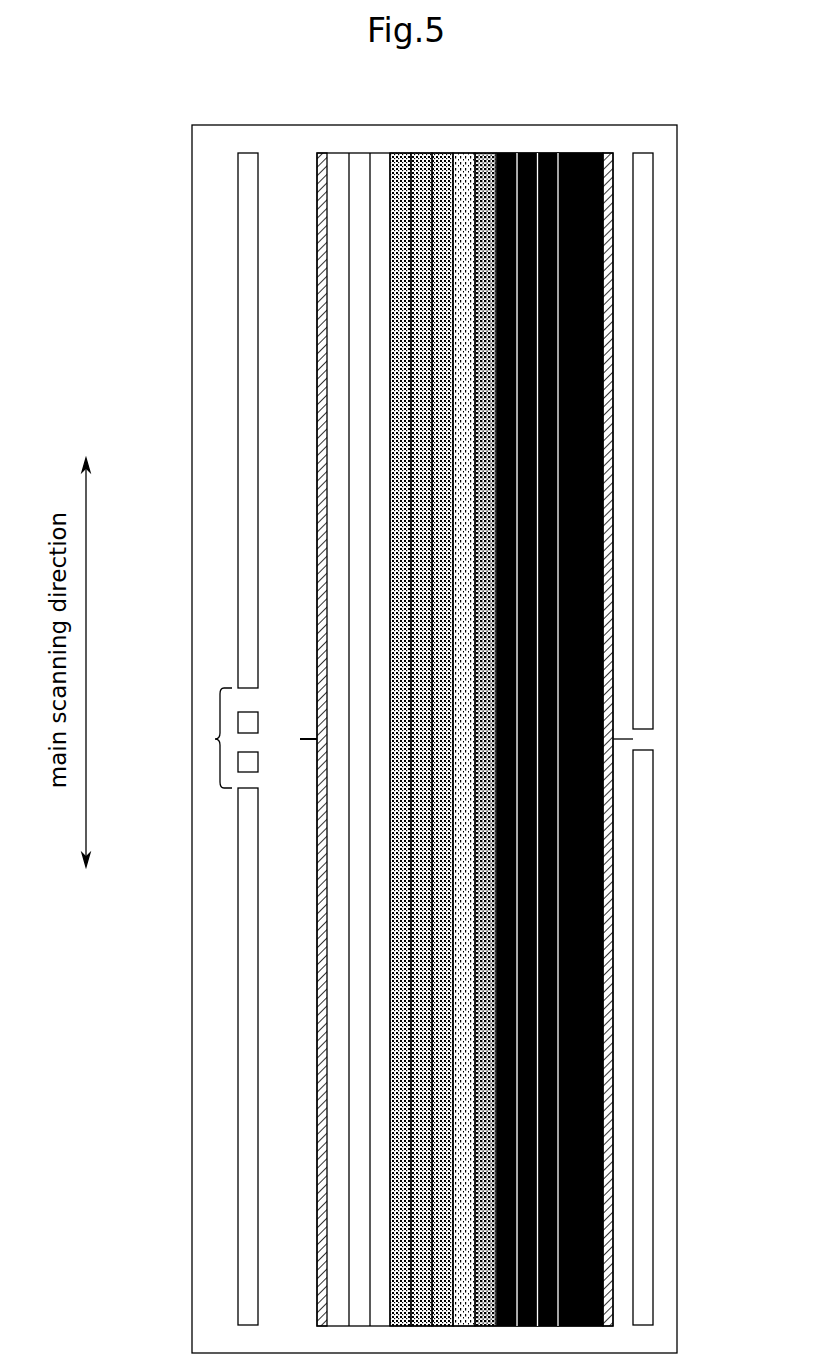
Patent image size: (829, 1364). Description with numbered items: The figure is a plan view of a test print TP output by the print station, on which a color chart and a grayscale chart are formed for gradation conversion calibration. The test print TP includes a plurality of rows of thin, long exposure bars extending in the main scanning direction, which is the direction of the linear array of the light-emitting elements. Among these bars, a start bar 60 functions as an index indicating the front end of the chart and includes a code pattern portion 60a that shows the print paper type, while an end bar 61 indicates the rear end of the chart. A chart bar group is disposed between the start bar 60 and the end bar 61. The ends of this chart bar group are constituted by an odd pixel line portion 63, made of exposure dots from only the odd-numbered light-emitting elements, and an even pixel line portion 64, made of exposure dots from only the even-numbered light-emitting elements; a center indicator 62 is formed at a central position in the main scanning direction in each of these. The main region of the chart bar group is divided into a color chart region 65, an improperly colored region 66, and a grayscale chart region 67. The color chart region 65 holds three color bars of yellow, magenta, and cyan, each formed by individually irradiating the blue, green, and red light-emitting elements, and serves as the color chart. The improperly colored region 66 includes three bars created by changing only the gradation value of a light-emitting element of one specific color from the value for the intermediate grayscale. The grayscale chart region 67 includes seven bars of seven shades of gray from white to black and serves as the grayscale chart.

The test print TP is at (192, 216).
The start bar 60 is at (240, 492).
The code pattern portion 60a is at (215, 739).
The end bar 61 is at (653, 563).
The center indicator 62 is at (308, 739).
The odd pixel line portion 63 is at (317, 420).
The even pixel line portion 64 is at (613, 410).
The color chart region 65 is at (391, 153).
The improperly colored region 66 is at (454, 153).
The grayscale chart region 67 is at (606, 153).